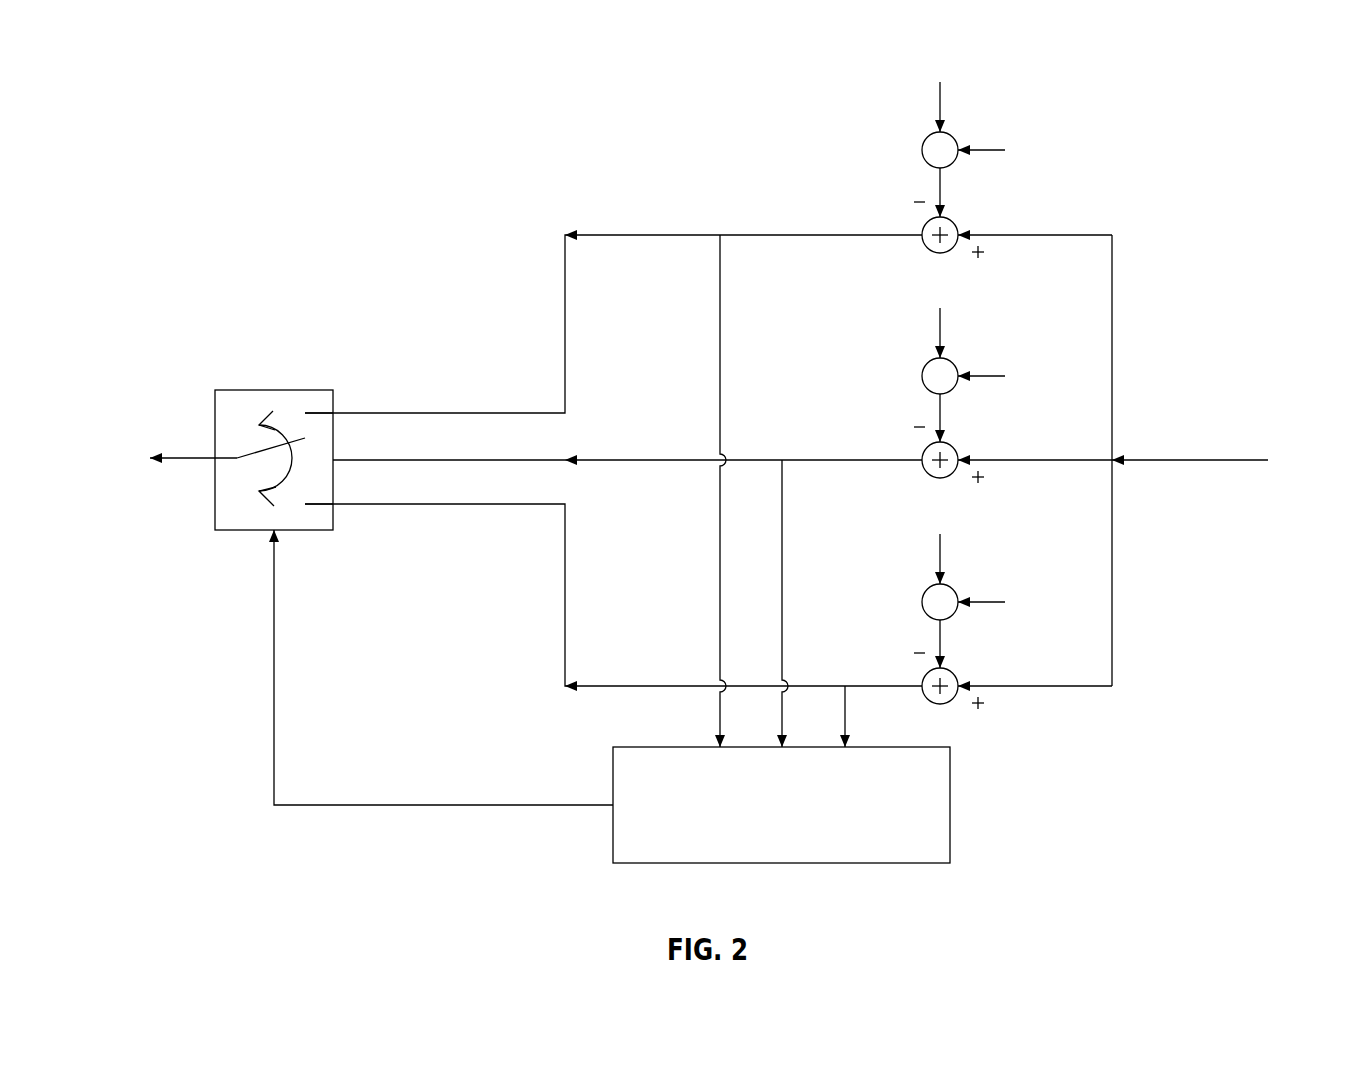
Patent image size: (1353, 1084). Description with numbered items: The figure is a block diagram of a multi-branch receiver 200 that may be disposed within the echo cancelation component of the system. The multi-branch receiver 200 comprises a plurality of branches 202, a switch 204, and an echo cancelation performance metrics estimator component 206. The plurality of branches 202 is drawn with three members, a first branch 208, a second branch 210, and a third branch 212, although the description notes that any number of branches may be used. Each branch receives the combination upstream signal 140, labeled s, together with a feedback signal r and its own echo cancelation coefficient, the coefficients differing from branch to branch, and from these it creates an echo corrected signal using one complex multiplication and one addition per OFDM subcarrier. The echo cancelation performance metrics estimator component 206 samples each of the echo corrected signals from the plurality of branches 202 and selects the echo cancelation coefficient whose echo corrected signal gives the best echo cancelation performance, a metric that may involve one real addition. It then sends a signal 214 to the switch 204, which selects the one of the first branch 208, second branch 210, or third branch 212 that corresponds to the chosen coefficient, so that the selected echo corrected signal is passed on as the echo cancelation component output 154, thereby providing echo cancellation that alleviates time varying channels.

The multi-branch receiver 200 is at (176, 68).
The plurality of branches 202 is at (491, 338).
The switch 204 is at (250, 389).
The echo cancelation performance metrics estimator component 206 is at (648, 746).
The first branch 208 is at (648, 234).
The second branch 210 is at (648, 459).
The third branch 212 is at (648, 685).
The signal 214 is at (274, 700).
The echo cancelation component output 154 is at (177, 456).
The combination upstream signal 140 is at (1235, 460).